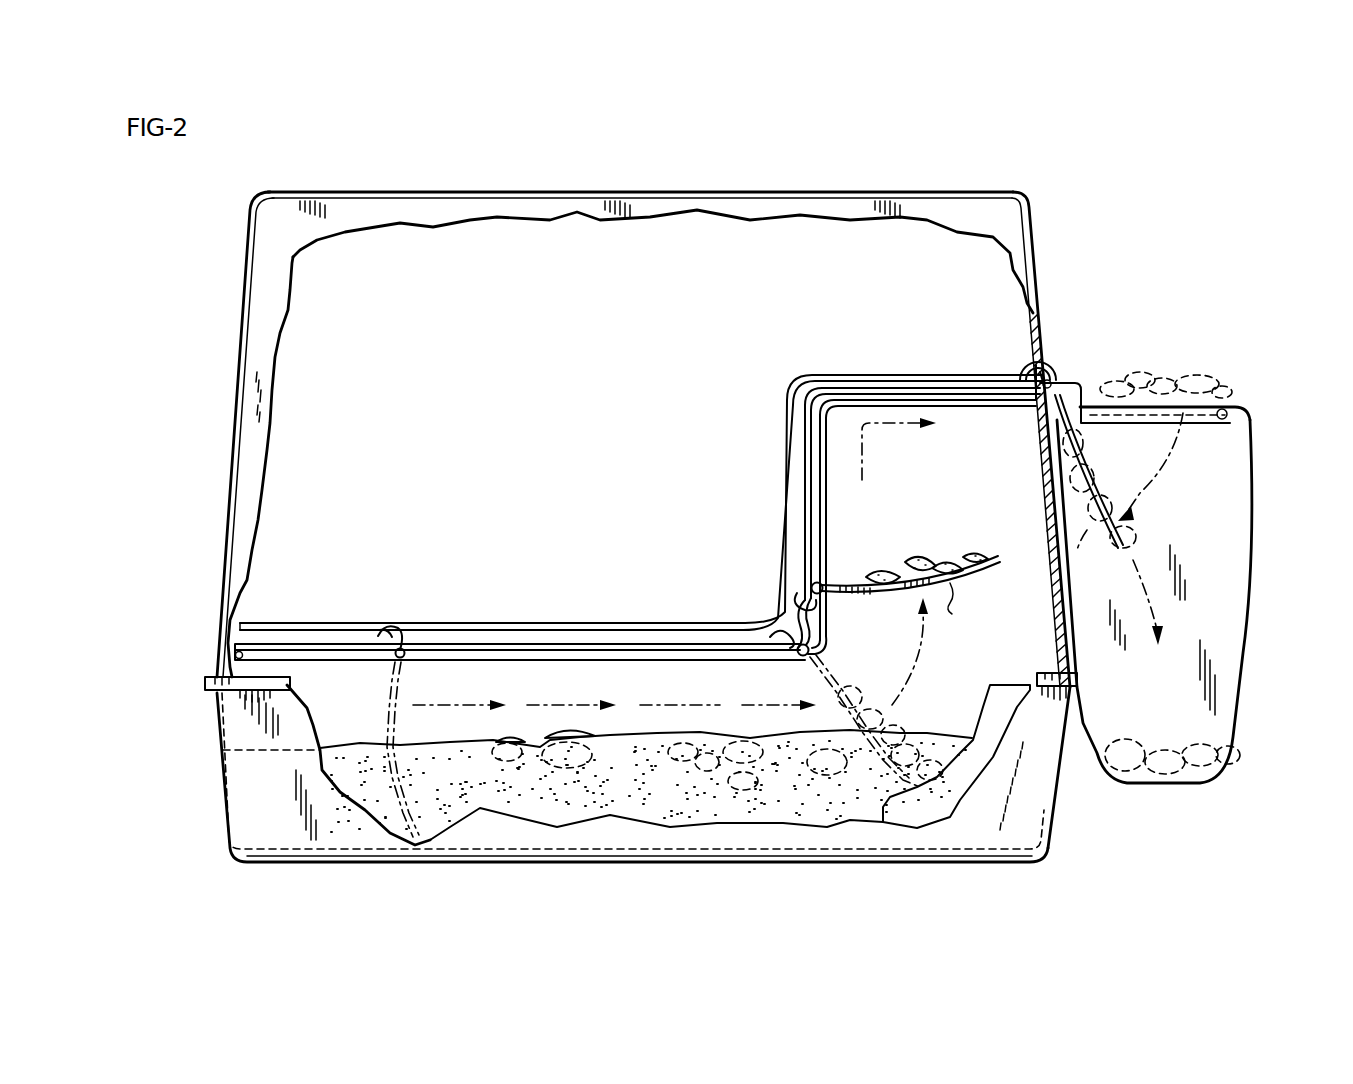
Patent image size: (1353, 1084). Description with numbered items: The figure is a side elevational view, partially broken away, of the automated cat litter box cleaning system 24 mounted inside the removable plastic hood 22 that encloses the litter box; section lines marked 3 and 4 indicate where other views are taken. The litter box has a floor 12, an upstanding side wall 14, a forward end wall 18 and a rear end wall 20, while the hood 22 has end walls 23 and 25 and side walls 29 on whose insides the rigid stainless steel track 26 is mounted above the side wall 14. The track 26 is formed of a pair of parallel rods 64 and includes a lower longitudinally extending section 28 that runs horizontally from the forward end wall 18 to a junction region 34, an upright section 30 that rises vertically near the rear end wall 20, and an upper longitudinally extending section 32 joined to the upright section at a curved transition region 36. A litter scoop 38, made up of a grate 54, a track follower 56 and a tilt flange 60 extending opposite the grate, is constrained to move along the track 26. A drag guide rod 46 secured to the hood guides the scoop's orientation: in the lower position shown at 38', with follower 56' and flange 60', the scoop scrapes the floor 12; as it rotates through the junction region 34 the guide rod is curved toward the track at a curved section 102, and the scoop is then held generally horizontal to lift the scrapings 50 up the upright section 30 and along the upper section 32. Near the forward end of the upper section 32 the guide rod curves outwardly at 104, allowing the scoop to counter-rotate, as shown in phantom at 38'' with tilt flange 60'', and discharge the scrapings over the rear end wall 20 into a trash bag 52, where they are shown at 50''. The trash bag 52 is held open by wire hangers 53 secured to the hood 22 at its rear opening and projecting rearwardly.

The floor 12 is at (500, 848).
The side wall 14 is at (253, 793).
The end wall 18 is at (217, 733).
The end wall 20 is at (1053, 822).
The hood 22 is at (512, 186).
The end wall of the hood 23 is at (247, 230).
The automated cat litter cleaning and disposal system 24 is at (432, 347).
The end wall of the hood 25 is at (1040, 274).
The track 26 is at (618, 640).
The lower longitudinally extending section 28 is at (508, 640).
The side wall of the hood 29 is at (660, 228).
The intermediate generally vertical upright section 30 is at (830, 526).
The upper longitudinally extending section 32 is at (998, 395).
The junction region 34 is at (830, 652).
The curved transition region 36 is at (840, 397).
The litter scoop 38 is at (920, 591).
The litter scoop 38' is at (428, 749).
The litter scoop 38'' is at (1119, 520).
The drag guide rod 46 is at (785, 437).
The scrapings 50 is at (927, 540).
The scrapings 50'' is at (1113, 461).
The trash bag 52 is at (1256, 543).
The wire hanger 53 is at (1230, 403).
The grate 54 is at (960, 611).
The track follower 56 is at (832, 616).
The track follower 56' is at (362, 666).
The tilt flange 60 is at (779, 575).
The tilt flange 60' is at (412, 617).
The tilt flange 60'' is at (1076, 356).
The stainless steel rod 64 is at (575, 660).
The curved section 102 is at (780, 623).
The outward curve 104 is at (1027, 355).
The section line 3- 3 is at (847, 183).
The section line 4- 4 is at (1007, 181).